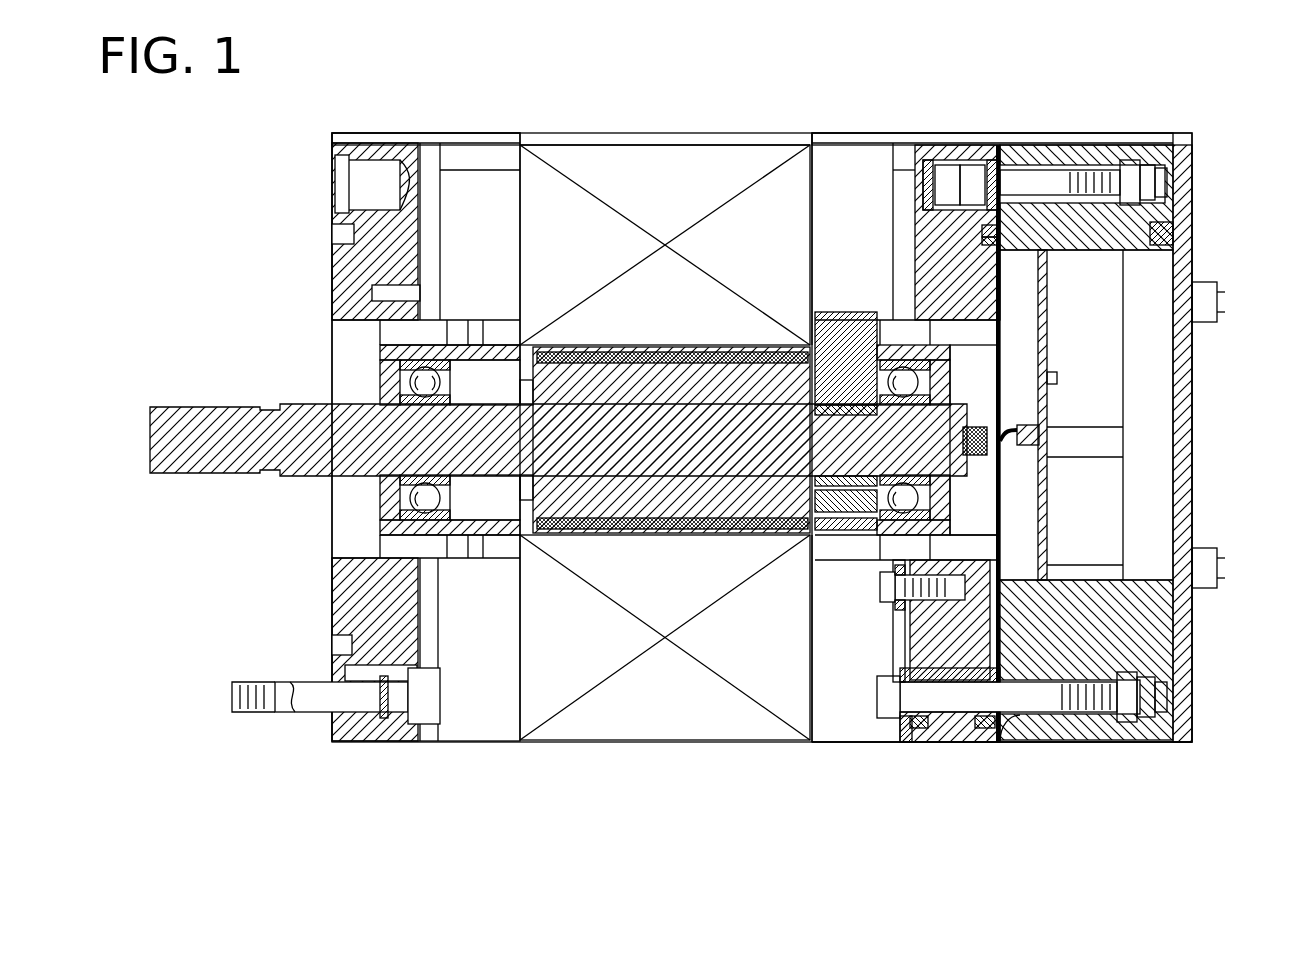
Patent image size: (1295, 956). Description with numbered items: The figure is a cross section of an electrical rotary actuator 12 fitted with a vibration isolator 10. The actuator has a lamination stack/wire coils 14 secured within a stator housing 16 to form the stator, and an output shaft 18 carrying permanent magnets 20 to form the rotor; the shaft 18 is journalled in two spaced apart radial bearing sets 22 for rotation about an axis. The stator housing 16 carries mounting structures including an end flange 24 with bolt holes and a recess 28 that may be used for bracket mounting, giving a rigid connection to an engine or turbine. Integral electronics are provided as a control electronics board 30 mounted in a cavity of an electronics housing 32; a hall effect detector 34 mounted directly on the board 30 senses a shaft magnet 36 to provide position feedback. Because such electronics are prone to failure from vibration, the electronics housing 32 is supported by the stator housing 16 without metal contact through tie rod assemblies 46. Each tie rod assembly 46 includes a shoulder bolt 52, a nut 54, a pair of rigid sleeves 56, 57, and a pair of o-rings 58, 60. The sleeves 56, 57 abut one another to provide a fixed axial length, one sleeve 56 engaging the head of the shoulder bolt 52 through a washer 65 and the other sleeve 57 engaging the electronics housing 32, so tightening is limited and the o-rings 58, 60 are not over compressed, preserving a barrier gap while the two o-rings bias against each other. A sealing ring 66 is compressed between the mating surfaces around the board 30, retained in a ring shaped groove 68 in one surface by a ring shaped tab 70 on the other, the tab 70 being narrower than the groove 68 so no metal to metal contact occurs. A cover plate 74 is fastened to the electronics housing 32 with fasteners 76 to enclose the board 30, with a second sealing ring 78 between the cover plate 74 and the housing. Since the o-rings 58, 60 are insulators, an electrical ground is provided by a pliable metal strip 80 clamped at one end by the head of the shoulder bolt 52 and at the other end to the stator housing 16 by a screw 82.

The vibration isolator 10 is at (998, 143).
The electrical rotary actuator 12 is at (713, 117).
The lamination stack/wire coils 14 is at (640, 160).
The stator housing 16 is at (383, 145).
The output shaft 18 is at (208, 405).
The permanent magnets 20 is at (656, 535).
The radial bearing sets 22 is at (410, 497).
The end flange 24 is at (332, 268).
The recess 28 is at (536, 145).
The control electronics board 30 is at (1050, 365).
The electronics housing 32 is at (1105, 150).
The hall effect detector 34 is at (1057, 378).
The shaft magnet 36 is at (975, 455).
The tie rod assembly 46 is at (1063, 190).
The shoulder bolt 52 is at (1048, 742).
The nut 54 is at (1127, 697).
The rigid sleeve 56 is at (905, 742).
The rigid sleeve 57 is at (1025, 742).
The o-ring 58 is at (920, 742).
The o-ring 60 is at (987, 742).
The washer 65 is at (900, 672).
The sealing ring 66 is at (985, 232).
The ring shaped groove 68 is at (985, 241).
The ring shaped tab 70 is at (1000, 238).
The cover plate 74 is at (1192, 434).
The fasteners 76 is at (1217, 302).
The sealing ring 78 is at (1165, 243).
The pliable metal strip 80 is at (899, 632).
The screw 82 is at (882, 583).